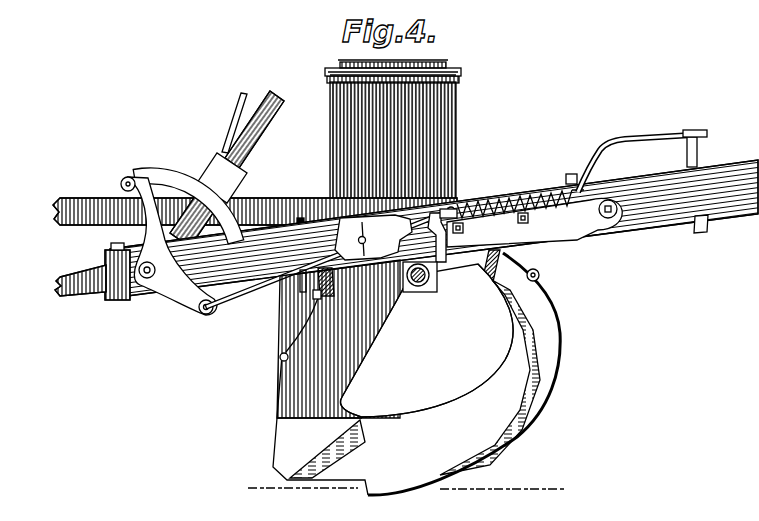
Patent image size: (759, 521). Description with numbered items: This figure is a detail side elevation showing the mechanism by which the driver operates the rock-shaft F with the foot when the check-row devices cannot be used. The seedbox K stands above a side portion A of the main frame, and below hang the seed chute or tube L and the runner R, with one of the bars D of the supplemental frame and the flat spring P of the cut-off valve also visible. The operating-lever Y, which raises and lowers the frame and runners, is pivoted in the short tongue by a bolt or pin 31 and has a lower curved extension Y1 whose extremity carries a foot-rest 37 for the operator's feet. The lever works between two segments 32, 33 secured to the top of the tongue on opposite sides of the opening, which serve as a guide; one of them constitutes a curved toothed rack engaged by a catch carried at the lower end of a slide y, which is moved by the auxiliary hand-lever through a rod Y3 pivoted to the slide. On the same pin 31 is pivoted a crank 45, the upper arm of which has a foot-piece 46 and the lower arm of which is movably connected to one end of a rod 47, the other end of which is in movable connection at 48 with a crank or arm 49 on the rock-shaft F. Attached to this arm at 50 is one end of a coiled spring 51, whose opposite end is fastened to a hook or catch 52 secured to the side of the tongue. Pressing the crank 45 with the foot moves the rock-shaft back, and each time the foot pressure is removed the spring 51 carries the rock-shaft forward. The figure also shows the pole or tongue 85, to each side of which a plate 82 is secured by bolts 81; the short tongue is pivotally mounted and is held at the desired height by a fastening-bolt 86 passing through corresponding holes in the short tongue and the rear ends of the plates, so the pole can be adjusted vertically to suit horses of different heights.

The seedbox K is at (465, 98).
The side portion of the main frame A is at (60, 212).
The operating-lever Y is at (258, 129).
The rod Y3 is at (226, 123).
The lower curved extension Y1 is at (61, 288).
The slide y is at (222, 178).
The segment 33 is at (185, 203).
The segment 32 is at (168, 181).
The bolt or pin 31 is at (148, 280).
The foot-piece 46 is at (126, 177).
The crank 45 is at (193, 306).
The rod 47 is at (256, 283).
The foot-rest 37 is at (110, 252).
The pole or tongue 85 is at (434, 229).
The movable connection 48 is at (418, 228).
The fastening-bolt 86 is at (363, 236).
The spring attachment point 50 is at (454, 208).
The coiled spring 51 is at (523, 197).
The hook or catch 52 is at (606, 200).
The bolt 81 is at (534, 210).
The plate 82 is at (490, 226).
The crank or arm 49 is at (438, 250).
The rock-shaft F is at (421, 292).
The bar of the supplemental frame D is at (319, 283).
The spring P is at (316, 303).
The seed chute or tube L is at (362, 350).
The runner R is at (537, 392).